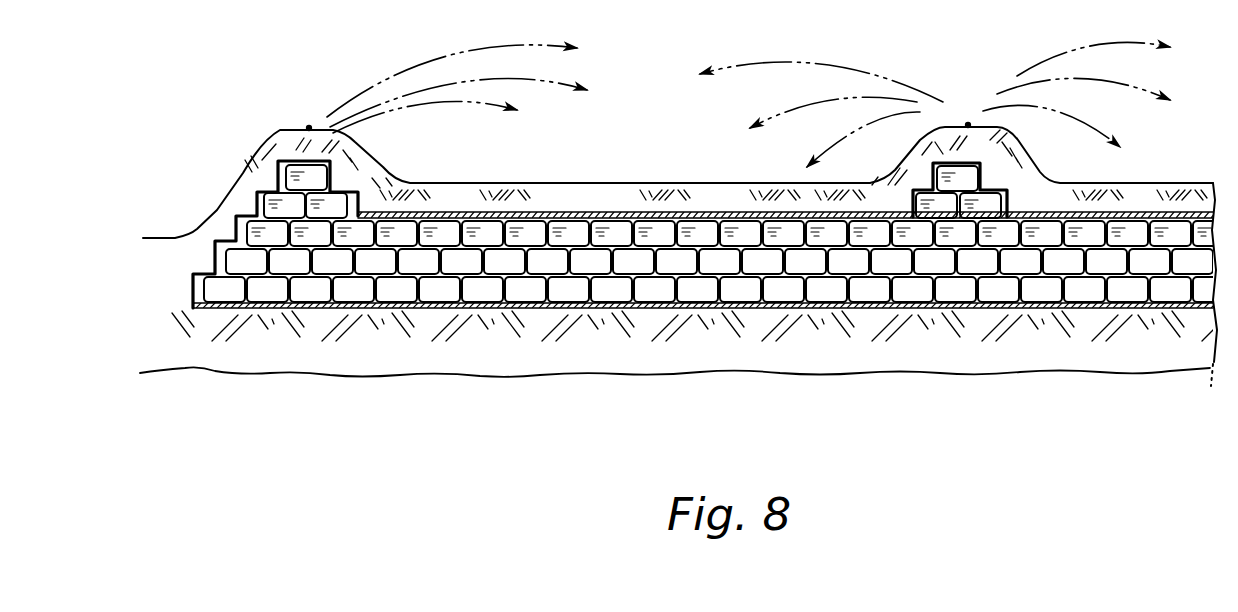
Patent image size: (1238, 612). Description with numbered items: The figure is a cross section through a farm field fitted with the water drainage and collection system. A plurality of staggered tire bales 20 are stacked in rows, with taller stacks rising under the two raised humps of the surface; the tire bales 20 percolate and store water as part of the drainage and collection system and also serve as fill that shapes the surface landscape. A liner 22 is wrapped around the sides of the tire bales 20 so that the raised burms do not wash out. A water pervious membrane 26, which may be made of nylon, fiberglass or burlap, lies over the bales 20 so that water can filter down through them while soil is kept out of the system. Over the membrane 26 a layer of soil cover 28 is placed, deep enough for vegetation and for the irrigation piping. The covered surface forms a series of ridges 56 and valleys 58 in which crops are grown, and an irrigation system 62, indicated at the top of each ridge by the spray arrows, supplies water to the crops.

The tire bales 20 is at (487, 228).
The liner 22 is at (500, 308).
The water pervious membrane 26 is at (250, 210).
The soil cover 28 is at (717, 197).
The ridges 56 is at (374, 160).
The valleys 58 is at (598, 182).
The irrigation system 62 is at (309, 125).